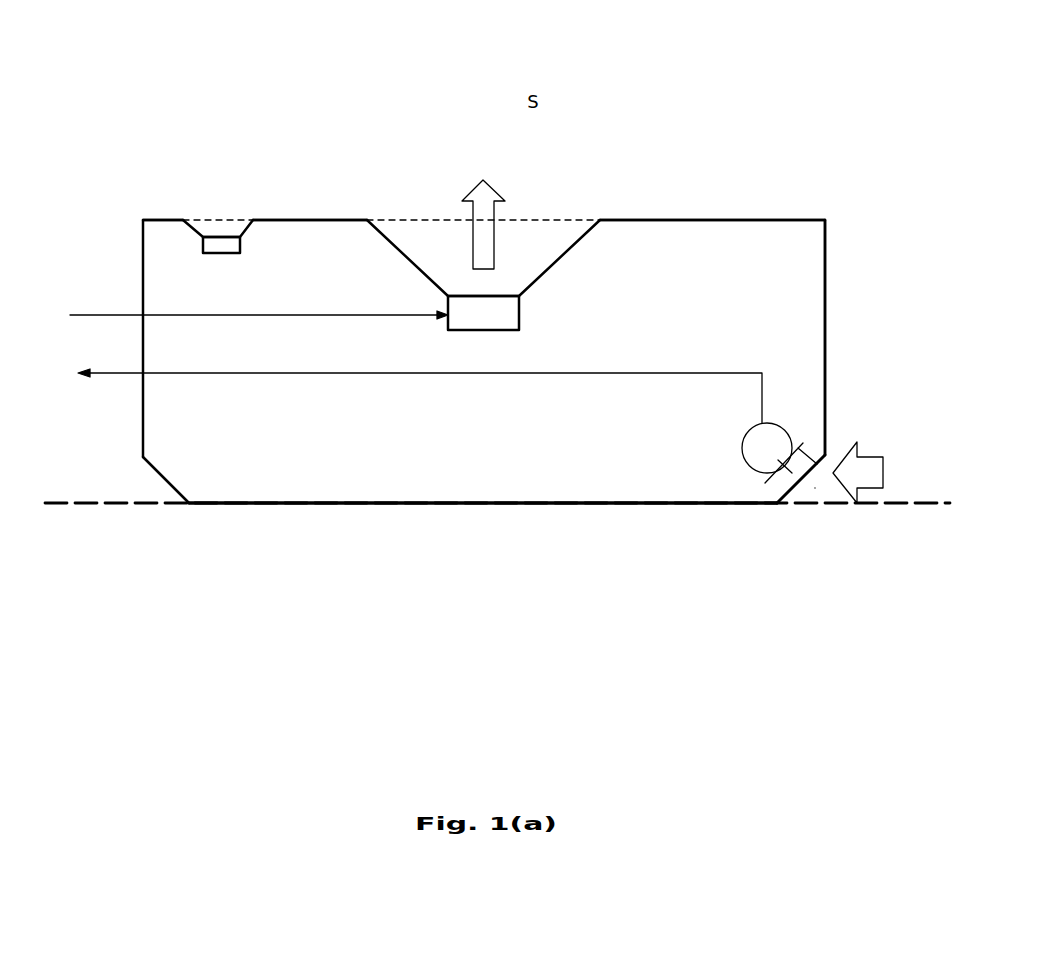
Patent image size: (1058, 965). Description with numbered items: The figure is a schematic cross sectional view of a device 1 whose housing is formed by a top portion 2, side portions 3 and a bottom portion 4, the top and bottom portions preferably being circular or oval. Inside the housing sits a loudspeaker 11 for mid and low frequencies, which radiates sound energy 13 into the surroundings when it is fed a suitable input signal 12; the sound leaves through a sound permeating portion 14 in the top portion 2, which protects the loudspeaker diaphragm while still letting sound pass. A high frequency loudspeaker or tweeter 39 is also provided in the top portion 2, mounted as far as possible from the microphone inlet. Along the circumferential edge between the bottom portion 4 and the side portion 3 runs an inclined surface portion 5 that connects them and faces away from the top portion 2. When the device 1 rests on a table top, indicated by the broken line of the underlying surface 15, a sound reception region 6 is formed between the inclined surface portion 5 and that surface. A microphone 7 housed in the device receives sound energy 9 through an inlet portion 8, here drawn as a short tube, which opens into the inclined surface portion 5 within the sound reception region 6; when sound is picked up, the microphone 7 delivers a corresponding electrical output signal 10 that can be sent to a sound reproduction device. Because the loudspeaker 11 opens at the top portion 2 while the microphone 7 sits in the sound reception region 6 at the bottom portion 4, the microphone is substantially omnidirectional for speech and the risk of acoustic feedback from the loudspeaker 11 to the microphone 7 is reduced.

The device 1 is at (428, 100).
The top portion 2 is at (663, 220).
The side portion 3 is at (825, 328).
The bottom portion 4 is at (348, 499).
The inclined surface portion 5 is at (162, 480).
The sound reception region 6 is at (815, 488).
The microphone 7 is at (783, 423).
The inlet portion 8 is at (803, 445).
The sound energy 9 is at (868, 470).
The output signal 10 is at (120, 374).
The loudspeaker 11 is at (412, 267).
The input signal 12 is at (120, 313).
The sound energy 13 is at (486, 240).
The sound permeating portion 14 is at (442, 218).
The underlying surface 15 is at (98, 505).
The high frequency loudspeaker (tweeter) 39 is at (197, 230).